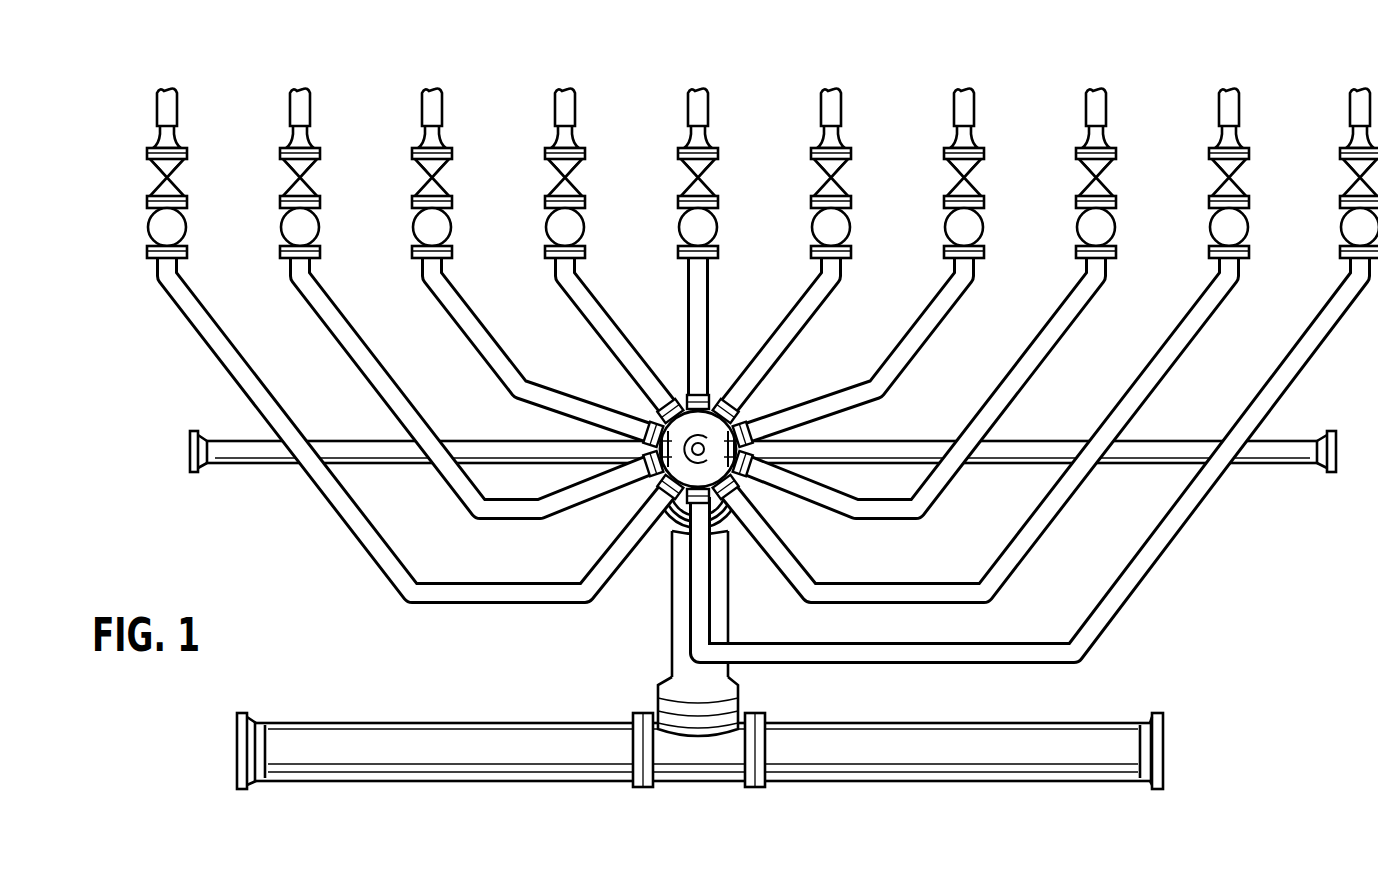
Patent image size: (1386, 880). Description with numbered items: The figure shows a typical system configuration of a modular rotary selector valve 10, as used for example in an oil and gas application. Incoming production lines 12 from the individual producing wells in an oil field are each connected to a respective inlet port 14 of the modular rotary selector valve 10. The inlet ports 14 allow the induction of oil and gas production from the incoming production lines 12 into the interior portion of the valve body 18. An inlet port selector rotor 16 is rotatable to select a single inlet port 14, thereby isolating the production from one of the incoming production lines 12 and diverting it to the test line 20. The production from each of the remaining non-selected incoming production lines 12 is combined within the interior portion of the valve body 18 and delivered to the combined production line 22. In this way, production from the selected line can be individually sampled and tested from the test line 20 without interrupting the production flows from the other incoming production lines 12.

The modular rotary selector valve 10 is at (638, 491).
The incoming production lines 12 is at (147, 72).
The inlet ports 14 is at (633, 430).
The inlet port selector rotor 16 is at (706, 442).
The valve body 18 is at (716, 476).
The test line 20 is at (1283, 470).
The combined production line 22 is at (1090, 709).